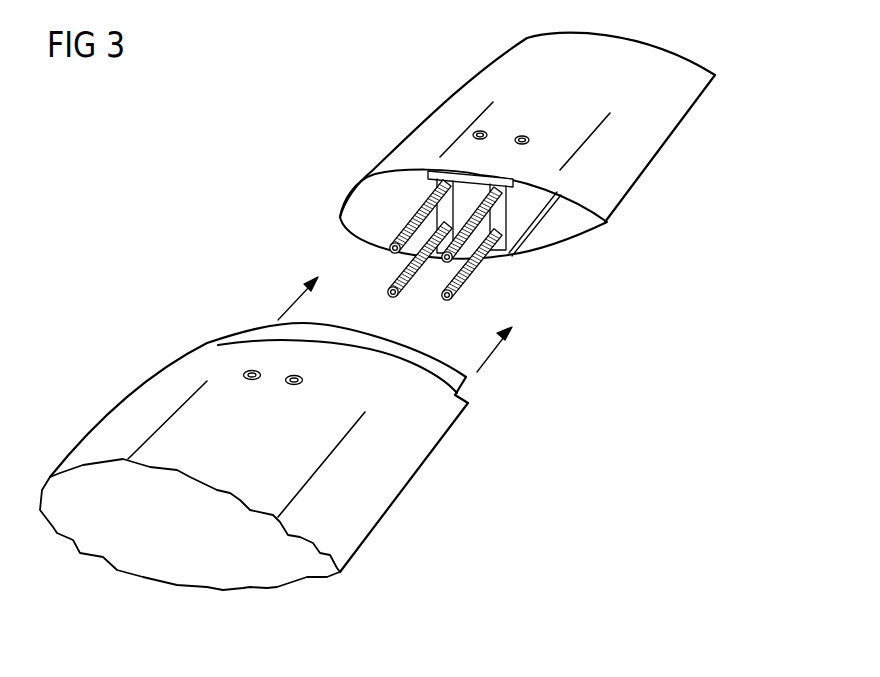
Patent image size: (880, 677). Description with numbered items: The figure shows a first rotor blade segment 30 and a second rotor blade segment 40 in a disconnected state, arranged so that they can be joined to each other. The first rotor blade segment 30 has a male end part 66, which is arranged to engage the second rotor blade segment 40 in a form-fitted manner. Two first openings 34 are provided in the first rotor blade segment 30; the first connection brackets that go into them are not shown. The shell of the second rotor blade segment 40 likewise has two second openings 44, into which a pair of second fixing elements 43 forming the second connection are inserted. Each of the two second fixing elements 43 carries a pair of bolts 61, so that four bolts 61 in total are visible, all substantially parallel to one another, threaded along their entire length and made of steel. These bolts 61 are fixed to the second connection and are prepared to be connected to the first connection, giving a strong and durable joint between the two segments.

The first rotor blade segment 30 is at (397, 480).
The first openings 34 is at (292, 387).
The second rotor blade segment 40 is at (657, 141).
The second fixing elements 43 is at (443, 213).
The second openings 44 is at (524, 133).
The bolts 61 is at (412, 290).
The male end part 66 is at (453, 380).